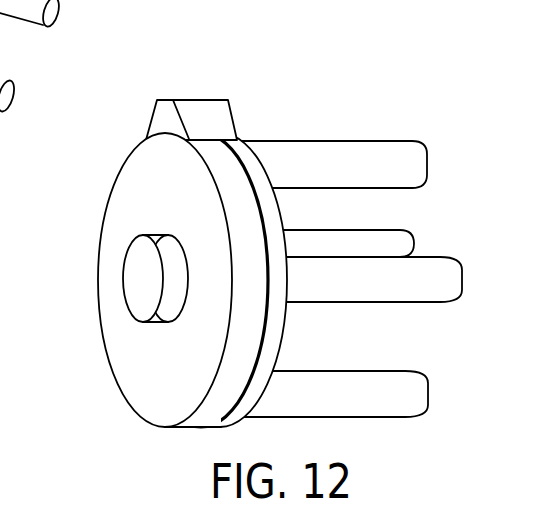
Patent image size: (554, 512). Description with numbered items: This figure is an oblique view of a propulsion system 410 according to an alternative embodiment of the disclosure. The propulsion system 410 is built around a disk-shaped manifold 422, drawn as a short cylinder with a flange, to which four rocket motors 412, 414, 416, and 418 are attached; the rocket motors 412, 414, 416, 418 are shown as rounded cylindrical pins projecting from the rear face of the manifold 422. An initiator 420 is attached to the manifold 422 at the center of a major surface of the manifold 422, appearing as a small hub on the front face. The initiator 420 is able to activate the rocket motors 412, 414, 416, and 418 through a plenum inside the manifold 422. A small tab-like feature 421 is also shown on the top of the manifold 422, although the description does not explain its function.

The propulsion system 410 is at (257, 251).
The rocket motor 412 is at (370, 167).
The rocket motor 414 is at (413, 242).
The rocket motor 416 is at (363, 400).
The rocket motor 418 is at (385, 295).
The initiator 420 is at (142, 274).
The key tab 421 is at (202, 100).
The disk-shaped manifold 422 is at (152, 228).